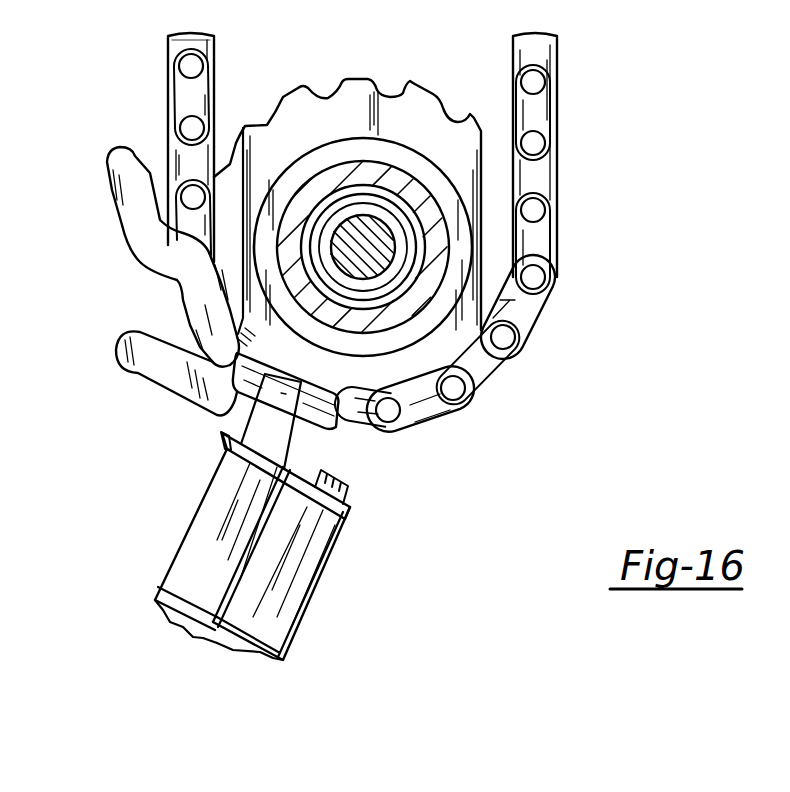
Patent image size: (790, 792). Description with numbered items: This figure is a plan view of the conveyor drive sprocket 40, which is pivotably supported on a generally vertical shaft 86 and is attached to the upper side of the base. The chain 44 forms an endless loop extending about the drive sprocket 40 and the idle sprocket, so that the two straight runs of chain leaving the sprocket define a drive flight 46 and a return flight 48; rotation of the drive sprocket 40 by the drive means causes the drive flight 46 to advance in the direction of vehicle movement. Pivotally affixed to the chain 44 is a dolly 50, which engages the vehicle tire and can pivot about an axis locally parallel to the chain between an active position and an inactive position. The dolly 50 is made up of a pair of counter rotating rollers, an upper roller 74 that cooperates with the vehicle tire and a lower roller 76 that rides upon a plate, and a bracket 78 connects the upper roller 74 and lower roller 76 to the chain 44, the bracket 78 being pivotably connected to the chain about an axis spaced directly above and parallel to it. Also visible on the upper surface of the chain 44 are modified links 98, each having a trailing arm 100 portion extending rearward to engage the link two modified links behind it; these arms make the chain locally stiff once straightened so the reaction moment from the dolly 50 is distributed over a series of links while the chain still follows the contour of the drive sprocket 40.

The conveyor drive sprocket 40 is at (353, 95).
The chain 44 is at (172, 92).
The drive flight 46 is at (167, 52).
The return flight 48 is at (557, 52).
The dolly 50 is at (300, 546).
The upper roller 74 is at (297, 583).
The lower roller 76 is at (204, 520).
The bracket 78 is at (261, 400).
The vertical shaft 86 is at (390, 248).
The modified link 98 is at (177, 283).
The trailing arm 100 is at (116, 176).